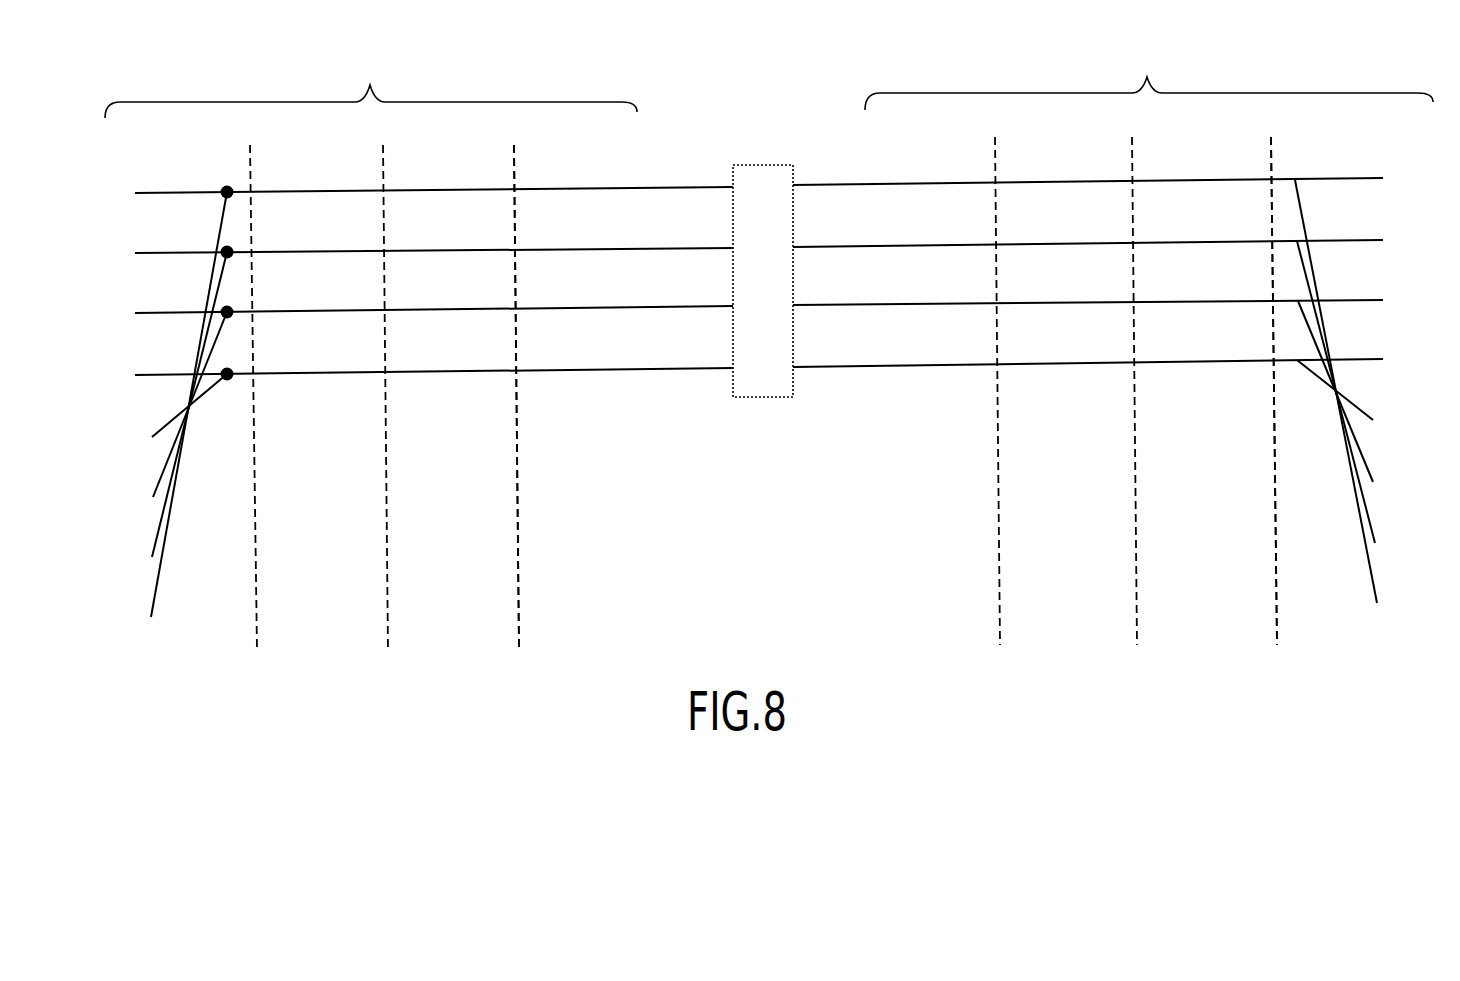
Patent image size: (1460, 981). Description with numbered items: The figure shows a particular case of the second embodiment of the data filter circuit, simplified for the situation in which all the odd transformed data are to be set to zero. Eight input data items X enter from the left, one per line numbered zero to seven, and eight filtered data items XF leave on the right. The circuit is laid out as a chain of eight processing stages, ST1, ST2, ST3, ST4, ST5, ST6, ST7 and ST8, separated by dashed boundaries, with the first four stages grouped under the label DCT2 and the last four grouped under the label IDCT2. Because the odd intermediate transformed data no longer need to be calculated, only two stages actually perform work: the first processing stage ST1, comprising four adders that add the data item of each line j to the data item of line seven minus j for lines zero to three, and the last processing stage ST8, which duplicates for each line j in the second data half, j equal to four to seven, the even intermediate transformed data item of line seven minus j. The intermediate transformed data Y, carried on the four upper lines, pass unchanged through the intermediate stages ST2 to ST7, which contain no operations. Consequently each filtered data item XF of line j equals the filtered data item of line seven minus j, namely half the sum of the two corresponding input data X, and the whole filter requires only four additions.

The input data item X is at (411, 381).
The DCT coefficients Y is at (763, 264).
The filtered data item XF is at (1114, 366).
The two-point DCT DCT2 is at (371, 80).
The two-point inverse DCT IDCT2 is at (1149, 73).
The first processing stage ST1 is at (219, 390).
The stage 2 ST2 is at (345, 390).
The stage 3 ST3 is at (476, 390).
The stage 4 ST4 is at (561, 390).
The stage 5 ST5 is at (958, 385).
The stage 6 ST6 is at (1090, 385).
The stage 7 ST7 is at (1229, 384).
The last processing stage ST8 is at (1307, 383).